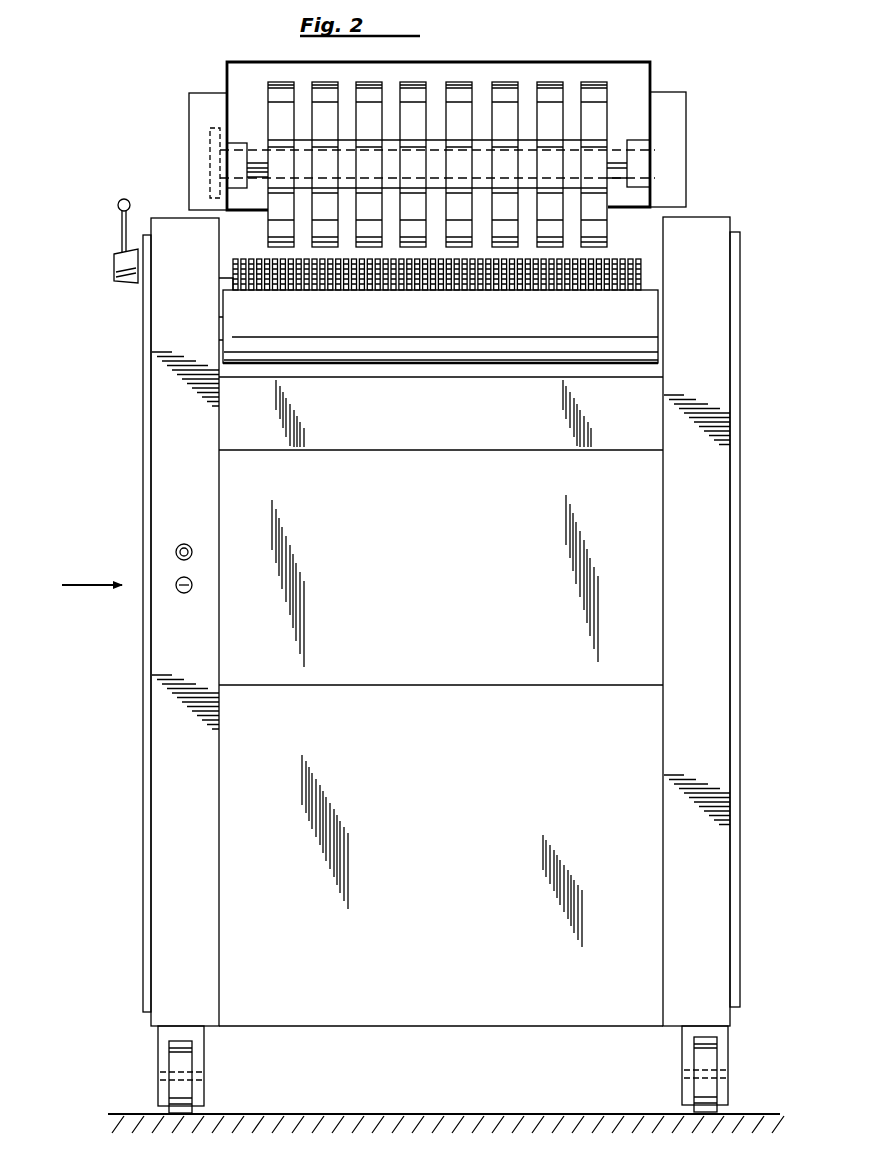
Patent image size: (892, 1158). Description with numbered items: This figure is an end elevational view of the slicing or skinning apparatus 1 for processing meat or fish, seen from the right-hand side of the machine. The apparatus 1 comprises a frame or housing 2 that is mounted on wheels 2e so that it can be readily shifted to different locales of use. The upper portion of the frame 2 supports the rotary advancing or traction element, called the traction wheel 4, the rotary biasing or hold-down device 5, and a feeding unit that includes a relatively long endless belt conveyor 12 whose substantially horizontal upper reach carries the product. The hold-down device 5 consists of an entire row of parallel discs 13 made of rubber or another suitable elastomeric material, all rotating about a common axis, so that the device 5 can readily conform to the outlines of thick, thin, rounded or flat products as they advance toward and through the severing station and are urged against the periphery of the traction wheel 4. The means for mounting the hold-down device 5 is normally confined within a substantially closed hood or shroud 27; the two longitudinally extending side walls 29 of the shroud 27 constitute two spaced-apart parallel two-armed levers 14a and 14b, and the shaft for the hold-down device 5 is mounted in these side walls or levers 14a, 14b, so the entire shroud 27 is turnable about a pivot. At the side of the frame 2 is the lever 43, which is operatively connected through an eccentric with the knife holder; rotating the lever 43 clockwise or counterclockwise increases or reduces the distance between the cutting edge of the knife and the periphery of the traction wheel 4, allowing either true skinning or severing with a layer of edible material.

The slicing or skinning apparatus 1 is at (137, 116).
The frame or housing 2 is at (436, 561).
The wheels 2e is at (170, 1057).
The traction wheel 4 is at (643, 271).
The hold-down device 5 is at (262, 196).
The endless belt conveyor 12 is at (403, 366).
The discs 13 is at (283, 236).
The two-armed lever 14a is at (243, 144).
The two-armed lever 14b is at (637, 140).
The shroud 27 is at (569, 60).
The side walls 29 is at (176, 142).
The lever 43 is at (122, 222).